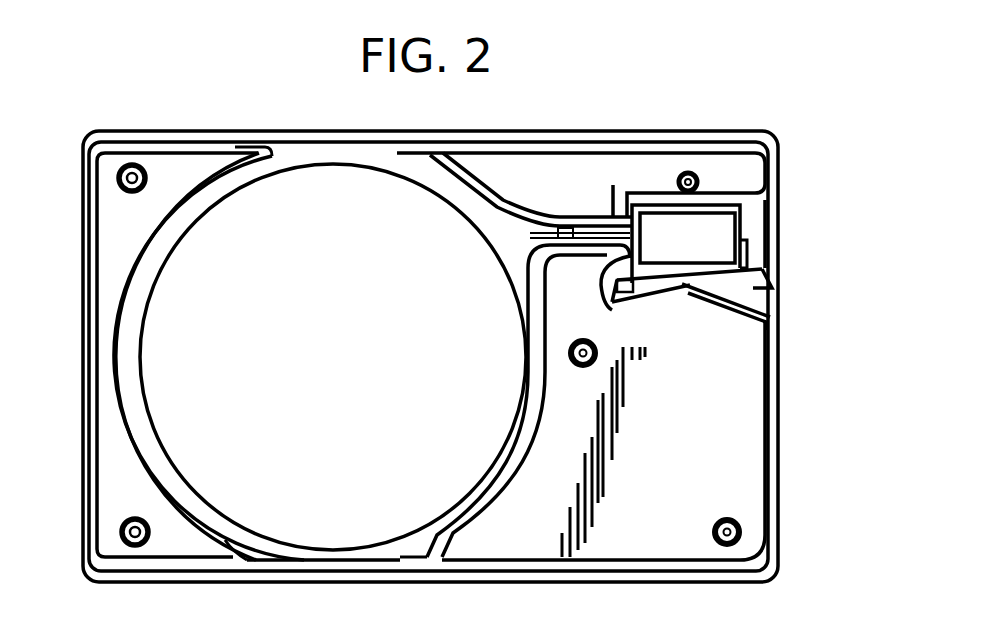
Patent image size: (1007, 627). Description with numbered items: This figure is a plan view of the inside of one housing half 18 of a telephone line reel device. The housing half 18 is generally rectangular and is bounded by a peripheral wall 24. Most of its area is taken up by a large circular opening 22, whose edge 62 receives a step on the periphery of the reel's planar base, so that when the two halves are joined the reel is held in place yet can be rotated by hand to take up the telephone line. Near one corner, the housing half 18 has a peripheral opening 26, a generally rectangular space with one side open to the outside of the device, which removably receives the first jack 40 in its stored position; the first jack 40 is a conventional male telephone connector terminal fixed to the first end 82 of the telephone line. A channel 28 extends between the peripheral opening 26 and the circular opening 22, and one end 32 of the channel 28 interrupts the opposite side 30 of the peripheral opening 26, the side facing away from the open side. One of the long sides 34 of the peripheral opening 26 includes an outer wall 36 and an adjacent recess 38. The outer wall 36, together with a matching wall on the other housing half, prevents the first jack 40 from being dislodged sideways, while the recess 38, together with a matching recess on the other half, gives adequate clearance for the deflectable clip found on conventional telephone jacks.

The housing half 18 is at (741, 480).
The circular opening 22 is at (436, 503).
The peripheral wall 24 is at (205, 135).
The peripheral opening 26 is at (745, 200).
The channel 28 is at (568, 221).
The opposite side 30 is at (612, 306).
The end of the channel 32 is at (613, 203).
The long side 34 is at (715, 312).
The outer wall 36 is at (742, 271).
The recess 38 is at (753, 293).
The first jack 40 is at (683, 293).
The edge 62 is at (207, 517).
The first end of the telephone line 82 is at (608, 252).